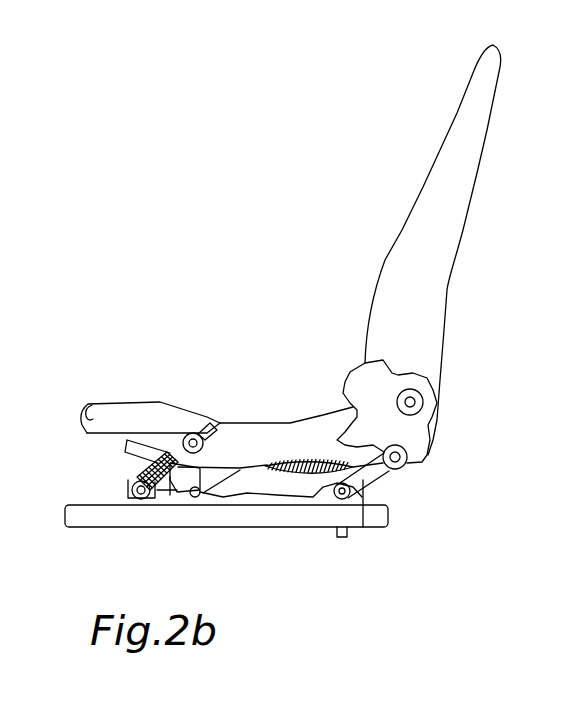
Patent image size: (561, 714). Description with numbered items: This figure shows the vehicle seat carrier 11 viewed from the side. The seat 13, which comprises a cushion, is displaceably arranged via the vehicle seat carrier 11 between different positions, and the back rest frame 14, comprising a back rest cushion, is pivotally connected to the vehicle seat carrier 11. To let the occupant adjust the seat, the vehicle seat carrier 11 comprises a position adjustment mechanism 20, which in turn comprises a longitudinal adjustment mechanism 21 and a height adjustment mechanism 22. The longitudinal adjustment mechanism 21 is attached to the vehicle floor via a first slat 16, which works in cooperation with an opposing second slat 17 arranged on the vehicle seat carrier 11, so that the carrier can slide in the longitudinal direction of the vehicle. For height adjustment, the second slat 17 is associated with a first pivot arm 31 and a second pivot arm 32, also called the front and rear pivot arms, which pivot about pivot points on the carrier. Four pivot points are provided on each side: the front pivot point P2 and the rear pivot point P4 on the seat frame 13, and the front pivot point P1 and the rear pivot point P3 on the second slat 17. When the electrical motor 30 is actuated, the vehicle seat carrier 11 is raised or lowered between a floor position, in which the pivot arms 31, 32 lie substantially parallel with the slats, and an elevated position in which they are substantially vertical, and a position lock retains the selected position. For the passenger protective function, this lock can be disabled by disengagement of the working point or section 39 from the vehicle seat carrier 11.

The vehicle seat carrier 11 is at (200, 388).
The seat 13 is at (296, 438).
The back rest frame 14 is at (432, 280).
The first slat 16 is at (115, 517).
The second slat 17 is at (165, 497).
The position adjustment mechanism 20 is at (403, 484).
The longitudinal adjustment mechanism 21 is at (277, 512).
The height adjustment mechanism 22 is at (130, 466).
The electrical motor 30 is at (393, 480).
The first pivot arm 31 is at (158, 495).
The second pivot arm 32 is at (363, 527).
The working point or section 39 is at (399, 430).
The front pivot point P1 is at (130, 487).
The front pivot point P2 is at (212, 426).
The rear pivot point P3 is at (340, 496).
The rear pivot point P4 is at (407, 457).